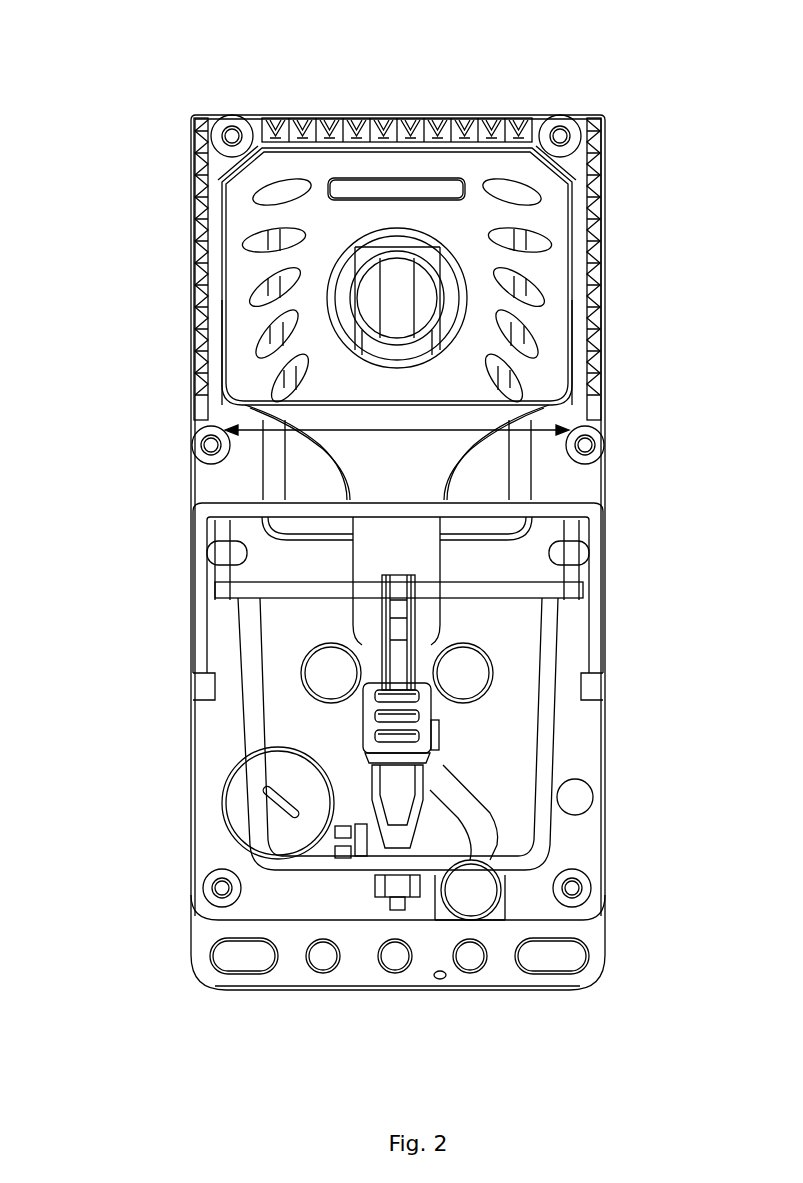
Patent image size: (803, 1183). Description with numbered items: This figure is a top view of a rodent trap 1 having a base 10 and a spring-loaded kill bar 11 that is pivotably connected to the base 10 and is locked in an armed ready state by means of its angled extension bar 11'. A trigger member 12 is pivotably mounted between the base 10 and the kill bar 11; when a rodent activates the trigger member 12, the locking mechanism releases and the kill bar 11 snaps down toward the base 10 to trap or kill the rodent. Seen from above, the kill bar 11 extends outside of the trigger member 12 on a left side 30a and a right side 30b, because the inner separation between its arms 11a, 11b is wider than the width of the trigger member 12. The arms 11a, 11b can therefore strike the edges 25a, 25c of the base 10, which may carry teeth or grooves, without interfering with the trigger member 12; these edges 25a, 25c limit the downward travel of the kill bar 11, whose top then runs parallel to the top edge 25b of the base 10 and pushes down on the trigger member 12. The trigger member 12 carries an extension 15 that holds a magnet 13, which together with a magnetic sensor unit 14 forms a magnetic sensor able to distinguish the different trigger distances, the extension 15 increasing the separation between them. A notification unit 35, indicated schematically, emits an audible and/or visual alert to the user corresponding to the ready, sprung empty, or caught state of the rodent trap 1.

The rodent trap 1 is at (575, 56).
The base 10 is at (600, 245).
The kill bar 11 is at (326, 587).
The left arm of the kill bar 11a is at (196, 540).
The right arm of the kill bar 11b is at (597, 532).
The angled extension bar 11' is at (324, 734).
The trigger member 12 is at (222, 240).
The magnet 13 is at (493, 847).
The magnetic sensor unit 14 is at (445, 920).
The extension 15 is at (495, 850).
The left edge of the base 25a is at (205, 145).
The top edge of the base 25b is at (322, 115).
The right edge of the base 25c is at (598, 178).
The left side of the trigger member 30a is at (224, 348).
The right side of the trigger member 30b is at (571, 331).
The notification unit 35 is at (588, 798).